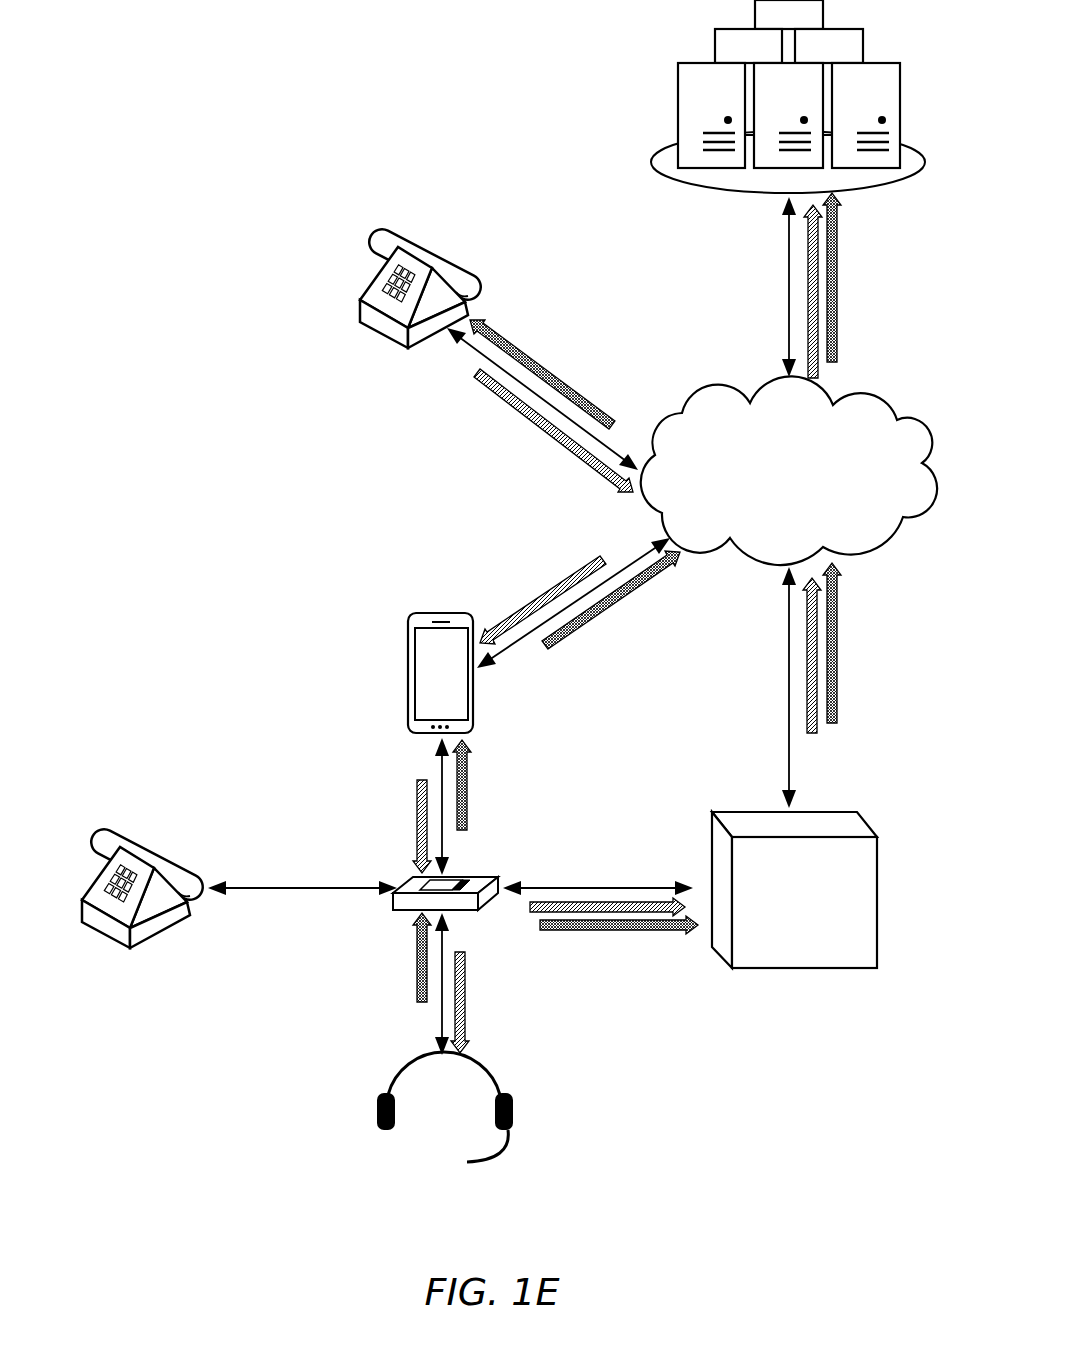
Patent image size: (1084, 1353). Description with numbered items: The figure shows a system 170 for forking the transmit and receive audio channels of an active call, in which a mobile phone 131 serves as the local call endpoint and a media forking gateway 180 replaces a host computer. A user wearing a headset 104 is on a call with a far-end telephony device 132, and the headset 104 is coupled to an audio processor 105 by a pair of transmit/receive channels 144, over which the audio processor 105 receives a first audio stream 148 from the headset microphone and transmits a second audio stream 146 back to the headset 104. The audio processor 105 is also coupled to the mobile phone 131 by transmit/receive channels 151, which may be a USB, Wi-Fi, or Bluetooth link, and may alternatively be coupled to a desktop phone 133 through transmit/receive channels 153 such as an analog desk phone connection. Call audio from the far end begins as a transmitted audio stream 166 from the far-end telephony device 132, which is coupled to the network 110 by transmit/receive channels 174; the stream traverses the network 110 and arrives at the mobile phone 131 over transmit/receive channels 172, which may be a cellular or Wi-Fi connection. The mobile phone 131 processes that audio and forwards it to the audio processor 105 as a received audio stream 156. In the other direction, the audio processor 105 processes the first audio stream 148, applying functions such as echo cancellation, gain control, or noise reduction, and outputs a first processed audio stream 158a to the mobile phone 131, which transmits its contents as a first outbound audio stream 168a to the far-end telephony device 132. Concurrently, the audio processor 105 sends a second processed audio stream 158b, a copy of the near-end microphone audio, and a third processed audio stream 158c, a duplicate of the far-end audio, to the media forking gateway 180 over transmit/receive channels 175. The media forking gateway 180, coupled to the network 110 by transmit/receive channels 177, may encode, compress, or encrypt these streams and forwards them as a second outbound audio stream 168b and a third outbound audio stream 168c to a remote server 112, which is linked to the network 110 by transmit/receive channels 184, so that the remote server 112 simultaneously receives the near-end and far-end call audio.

The remote server 112 is at (672, 136).
The network 110 is at (789, 470).
The far-end telephony device 132 is at (406, 222).
The desktop phone 133 is at (132, 826).
The mobile phone 131 is at (470, 613).
The audio processor 105 is at (465, 876).
The headset 104 is at (493, 1080).
The media forking gateway 180 is at (794, 890).
The system 170 is at (152, 1222).
The transmit/receive channels 184 is at (788, 302).
The transmit/receive channels 177 is at (787, 658).
The transmit/receive channels 174 is at (477, 345).
The transmit/receive channels 172 is at (501, 653).
The transmit/receive channels 151 is at (436, 764).
The transmit/receive channels 144 is at (440, 1015).
The transmit/receive channels 153 is at (256, 890).
The transmit/receive channels 175 is at (657, 887).
The first outbound audio stream 168a is at (527, 356).
The second outbound audio stream 168b is at (837, 345).
The third outbound audio stream 168c is at (818, 367).
The transmitted audio stream 166 is at (528, 416).
The first processed audio stream 158a is at (466, 768).
The second processed audio stream 158b is at (577, 927).
The third processed audio stream 158c is at (530, 907).
The received audio stream 156 is at (418, 822).
The first audio stream 148 is at (417, 976).
The second audio stream 146 is at (468, 998).